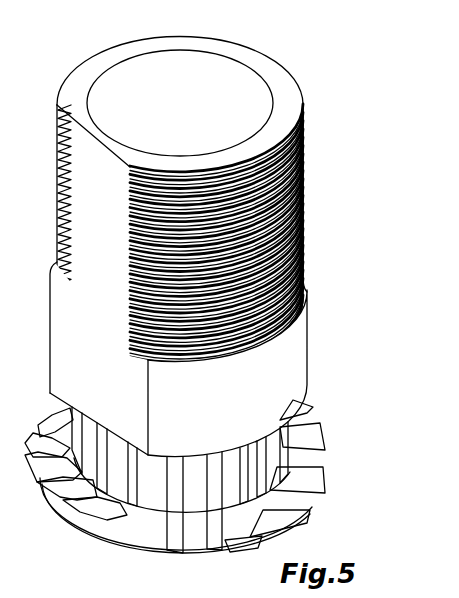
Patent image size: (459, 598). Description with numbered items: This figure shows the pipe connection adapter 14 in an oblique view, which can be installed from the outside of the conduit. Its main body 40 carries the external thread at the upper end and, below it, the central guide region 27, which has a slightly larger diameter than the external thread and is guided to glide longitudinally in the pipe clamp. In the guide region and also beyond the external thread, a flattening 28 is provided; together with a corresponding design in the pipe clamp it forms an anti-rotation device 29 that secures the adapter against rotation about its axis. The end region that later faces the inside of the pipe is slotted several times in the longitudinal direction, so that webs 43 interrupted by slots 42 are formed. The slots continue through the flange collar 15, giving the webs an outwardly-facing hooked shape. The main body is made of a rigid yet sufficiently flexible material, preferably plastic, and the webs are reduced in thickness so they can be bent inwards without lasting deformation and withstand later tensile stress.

The pipe connection adapter 14 is at (290, 22).
The main body 40 is at (288, 106).
The anti-rotation device 29 is at (107, 166).
The flattening 28 is at (98, 378).
The central guide region 27 is at (297, 358).
The flange collar 15 is at (341, 469).
The slots 42 is at (172, 546).
The webs 43 is at (152, 502).